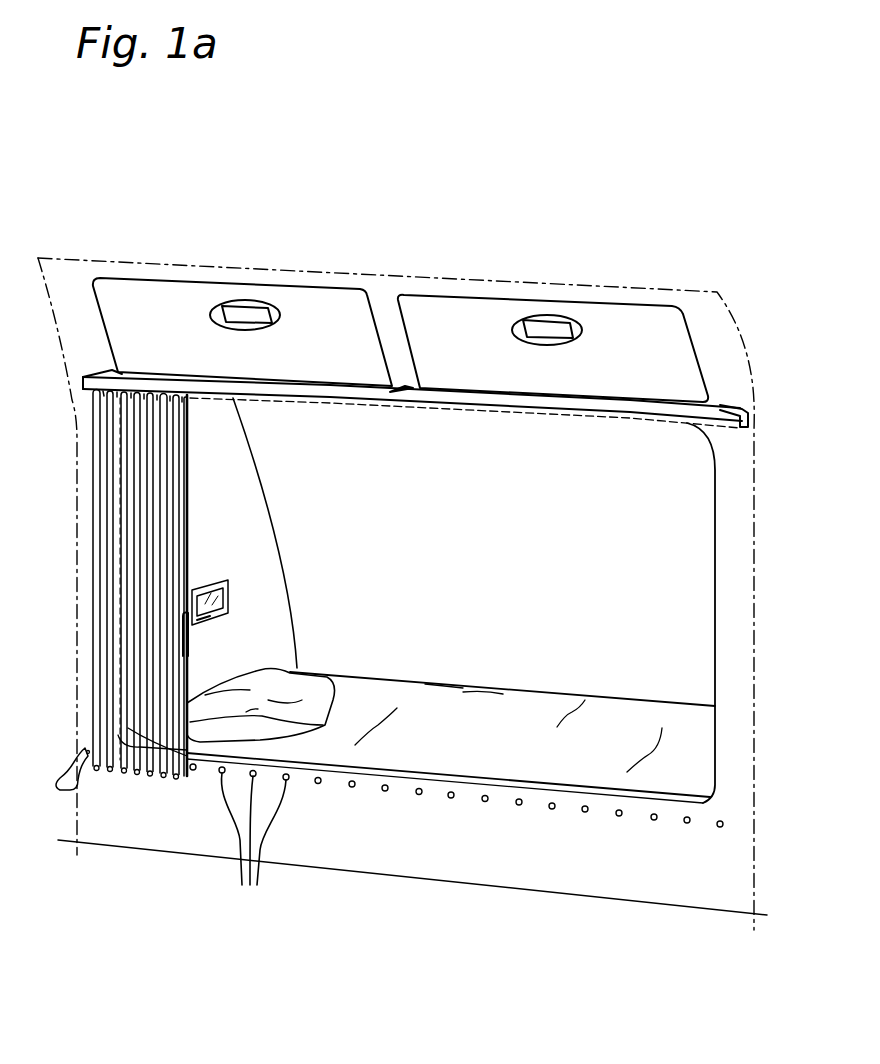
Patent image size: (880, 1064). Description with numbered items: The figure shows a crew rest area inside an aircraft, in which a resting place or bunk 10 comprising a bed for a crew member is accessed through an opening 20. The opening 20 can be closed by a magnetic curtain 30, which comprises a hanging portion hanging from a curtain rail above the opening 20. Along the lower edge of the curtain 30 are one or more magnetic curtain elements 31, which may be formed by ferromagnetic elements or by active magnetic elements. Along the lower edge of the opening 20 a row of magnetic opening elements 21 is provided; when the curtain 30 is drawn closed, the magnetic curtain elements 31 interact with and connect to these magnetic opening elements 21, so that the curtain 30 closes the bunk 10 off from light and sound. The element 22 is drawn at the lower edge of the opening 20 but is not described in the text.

The bunk 10 is at (461, 713).
The opening 20 is at (658, 533).
The magnetic opening elements 21 is at (456, 837).
The bed edge strip 22 is at (501, 783).
The magnetic curtain 30 is at (133, 488).
The magnetic curtain elements 31 is at (66, 786).